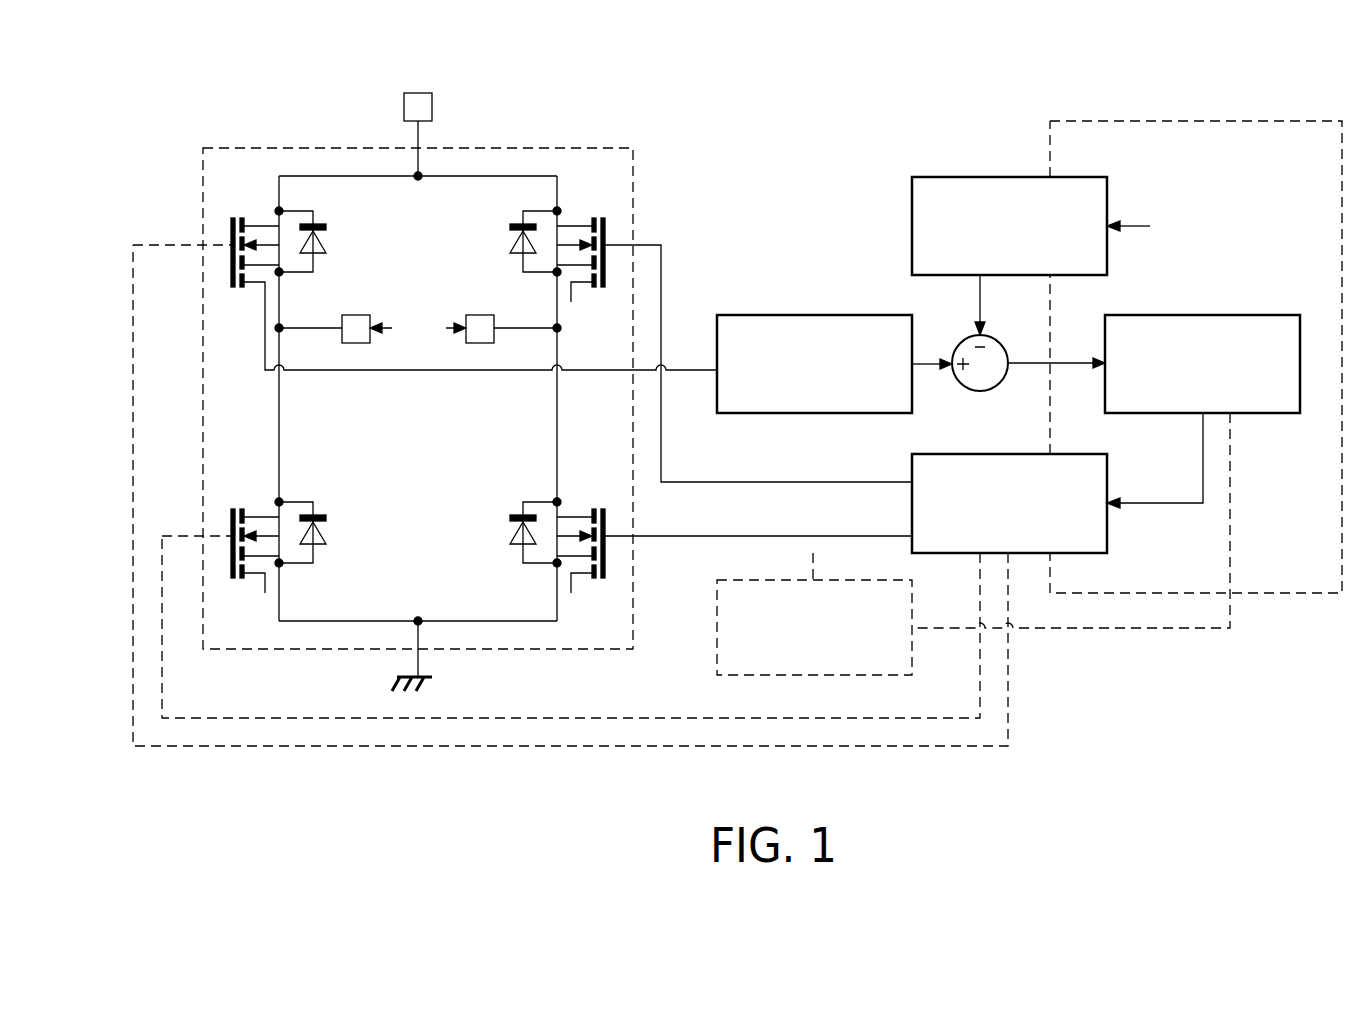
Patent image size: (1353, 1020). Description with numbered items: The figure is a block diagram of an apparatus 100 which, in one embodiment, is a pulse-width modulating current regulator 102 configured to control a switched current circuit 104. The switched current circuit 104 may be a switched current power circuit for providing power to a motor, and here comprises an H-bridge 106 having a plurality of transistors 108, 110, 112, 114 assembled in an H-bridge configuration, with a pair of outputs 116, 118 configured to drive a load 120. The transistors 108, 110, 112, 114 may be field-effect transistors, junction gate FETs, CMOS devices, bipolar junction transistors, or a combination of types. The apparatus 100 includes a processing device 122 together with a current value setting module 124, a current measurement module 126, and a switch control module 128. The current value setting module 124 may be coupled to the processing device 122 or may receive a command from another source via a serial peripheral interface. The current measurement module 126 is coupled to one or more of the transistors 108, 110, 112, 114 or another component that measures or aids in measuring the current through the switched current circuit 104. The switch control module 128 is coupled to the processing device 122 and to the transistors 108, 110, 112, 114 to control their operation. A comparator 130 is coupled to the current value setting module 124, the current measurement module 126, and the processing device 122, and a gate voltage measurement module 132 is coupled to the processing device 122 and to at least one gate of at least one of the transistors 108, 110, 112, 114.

The apparatus 100 is at (1158, 70).
The pulse-width modulating (PWM) current regulator 102 is at (1256, 92).
The switched current circuit 104 is at (608, 148).
The H-bridge 106 is at (523, 148).
The transistor 108 is at (330, 208).
The transistor 110 is at (331, 566).
The transistor 112 is at (506, 208).
The transistor 114 is at (505, 566).
The output 116 is at (358, 343).
The output 118 is at (484, 343).
The load 120 is at (423, 305).
The processing device 122 is at (1265, 315).
The current value setting module 124 is at (947, 177).
The current measurement module 126 is at (752, 315).
The switch control module 128 is at (953, 454).
The comparator 130 is at (986, 391).
The gate voltage measurement module 132 is at (717, 628).